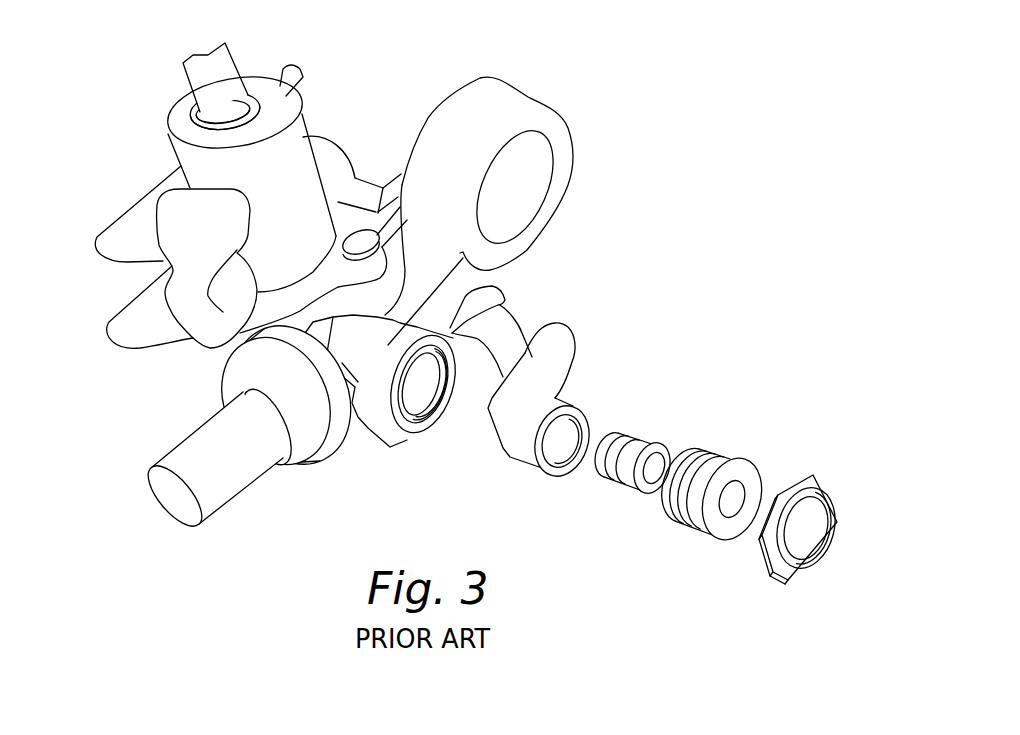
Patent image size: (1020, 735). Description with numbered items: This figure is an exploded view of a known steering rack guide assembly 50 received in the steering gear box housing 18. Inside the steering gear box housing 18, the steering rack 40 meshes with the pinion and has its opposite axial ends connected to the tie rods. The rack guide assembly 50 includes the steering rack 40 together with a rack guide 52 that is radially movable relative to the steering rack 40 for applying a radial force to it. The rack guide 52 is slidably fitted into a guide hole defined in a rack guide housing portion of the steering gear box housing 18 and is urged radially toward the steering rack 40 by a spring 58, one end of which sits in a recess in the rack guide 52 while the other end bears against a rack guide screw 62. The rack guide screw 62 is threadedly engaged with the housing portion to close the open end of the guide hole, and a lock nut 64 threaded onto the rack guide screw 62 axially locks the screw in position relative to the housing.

The steering gear box housing 18 is at (400, 343).
The steering rack 40 is at (228, 473).
The steering rack guide assembly 50 is at (786, 608).
The rack guide 52 is at (580, 407).
The spring 58 is at (640, 440).
The rack guide screw 62 is at (717, 457).
The lock nut 64 is at (815, 476).